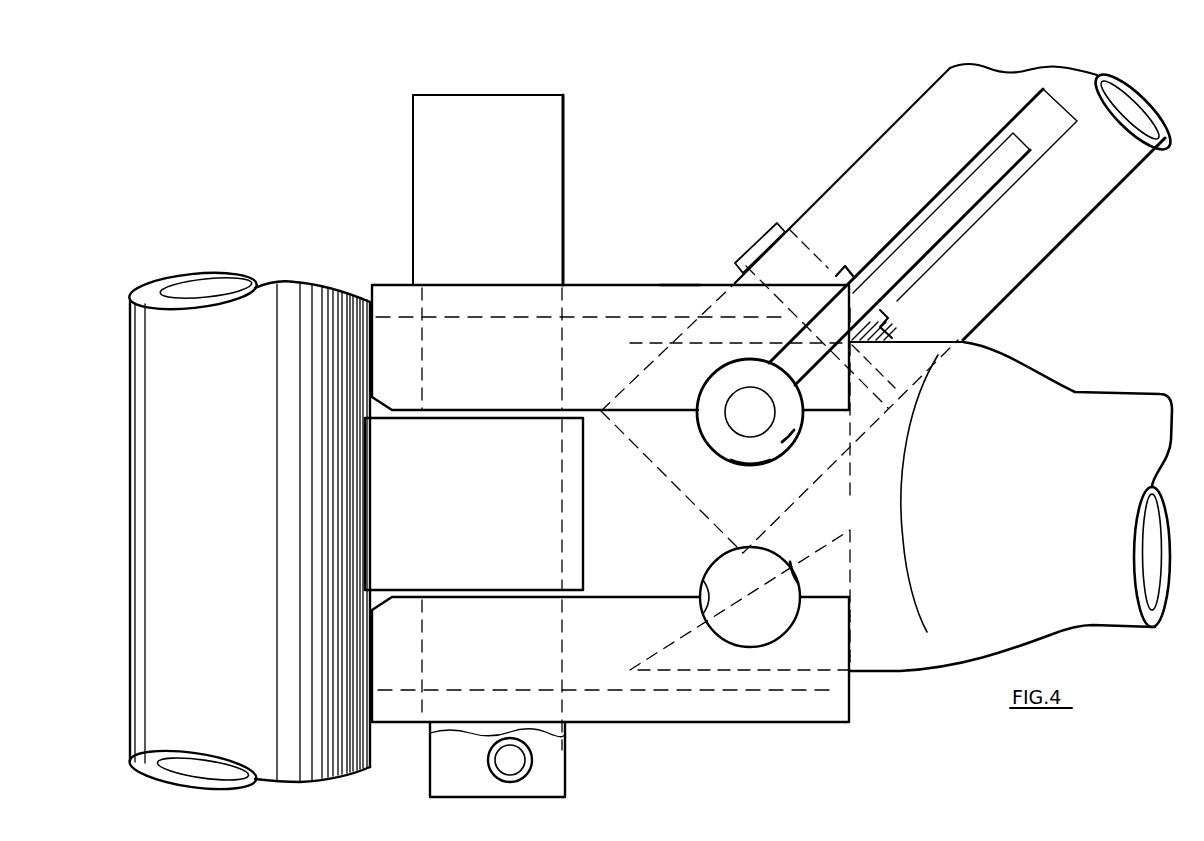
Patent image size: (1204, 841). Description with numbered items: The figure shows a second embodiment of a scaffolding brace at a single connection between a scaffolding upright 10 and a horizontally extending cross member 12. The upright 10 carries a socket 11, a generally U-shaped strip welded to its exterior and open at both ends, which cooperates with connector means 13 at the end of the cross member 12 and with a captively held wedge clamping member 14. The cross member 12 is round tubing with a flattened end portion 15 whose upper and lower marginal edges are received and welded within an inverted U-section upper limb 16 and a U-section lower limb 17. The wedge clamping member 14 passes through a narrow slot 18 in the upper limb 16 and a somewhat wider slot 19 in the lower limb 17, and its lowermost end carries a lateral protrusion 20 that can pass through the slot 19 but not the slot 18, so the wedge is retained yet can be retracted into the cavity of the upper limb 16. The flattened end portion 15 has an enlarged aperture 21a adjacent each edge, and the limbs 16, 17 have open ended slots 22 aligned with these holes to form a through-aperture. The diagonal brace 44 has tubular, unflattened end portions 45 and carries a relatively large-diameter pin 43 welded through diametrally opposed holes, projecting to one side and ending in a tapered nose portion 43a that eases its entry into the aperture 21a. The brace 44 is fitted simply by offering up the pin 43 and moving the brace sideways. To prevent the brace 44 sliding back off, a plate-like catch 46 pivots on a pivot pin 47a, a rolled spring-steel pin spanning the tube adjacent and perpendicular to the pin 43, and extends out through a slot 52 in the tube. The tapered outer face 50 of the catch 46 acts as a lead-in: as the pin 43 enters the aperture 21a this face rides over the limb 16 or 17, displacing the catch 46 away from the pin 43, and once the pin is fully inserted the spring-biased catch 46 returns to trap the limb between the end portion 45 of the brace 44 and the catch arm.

The scaffolding upright 10 is at (130, 630).
The socket 11 is at (585, 549).
The cross member 12 is at (1082, 392).
The connector means 13 is at (636, 284).
The wedge clamping member 14 is at (565, 150).
The flattened end portion 15 is at (876, 516).
The upper limb 16 is at (683, 284).
The lower limb 17 is at (853, 723).
The slot 18 is at (577, 300).
The slot 19 is at (577, 710).
The lateral protrusion 20 is at (532, 760).
The aperture 21a is at (785, 443).
The open ended slot 22 is at (703, 588).
The pin 43 is at (705, 424).
The tapered nose portion 43a is at (757, 452).
The diagonal brace 44 is at (883, 138).
The end portion 45 is at (735, 283).
The catch 46 is at (969, 208).
The pivot pin 47a is at (768, 240).
The outer face 50 is at (803, 360).
The slot 52 is at (947, 174).